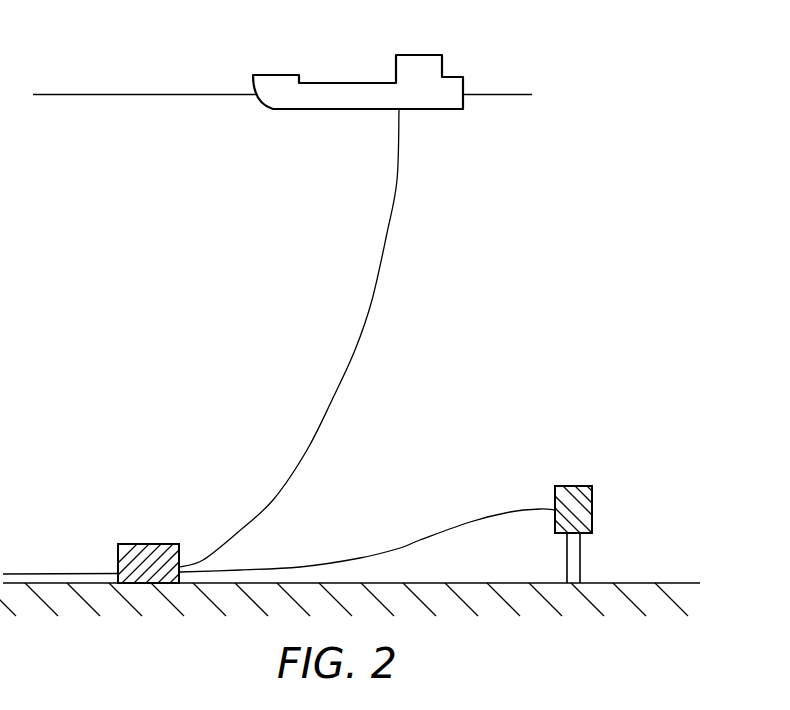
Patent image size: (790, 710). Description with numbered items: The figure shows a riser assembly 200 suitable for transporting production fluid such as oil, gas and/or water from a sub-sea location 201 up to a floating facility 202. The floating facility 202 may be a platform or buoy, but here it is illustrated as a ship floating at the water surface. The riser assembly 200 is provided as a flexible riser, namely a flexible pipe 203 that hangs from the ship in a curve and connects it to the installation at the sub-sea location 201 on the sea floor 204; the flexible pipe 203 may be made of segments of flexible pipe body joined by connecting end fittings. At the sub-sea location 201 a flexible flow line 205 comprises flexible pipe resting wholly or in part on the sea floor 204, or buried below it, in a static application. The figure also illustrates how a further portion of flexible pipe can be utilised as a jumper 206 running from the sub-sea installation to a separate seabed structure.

The riser assembly 200 is at (413, 191).
The sub-sea location 201 is at (146, 544).
The floating facility 202 is at (274, 75).
The flexible pipe 203 is at (331, 406).
The sea floor 204 is at (650, 583).
The flow line 205 is at (44, 574).
The jumper 206 is at (492, 514).